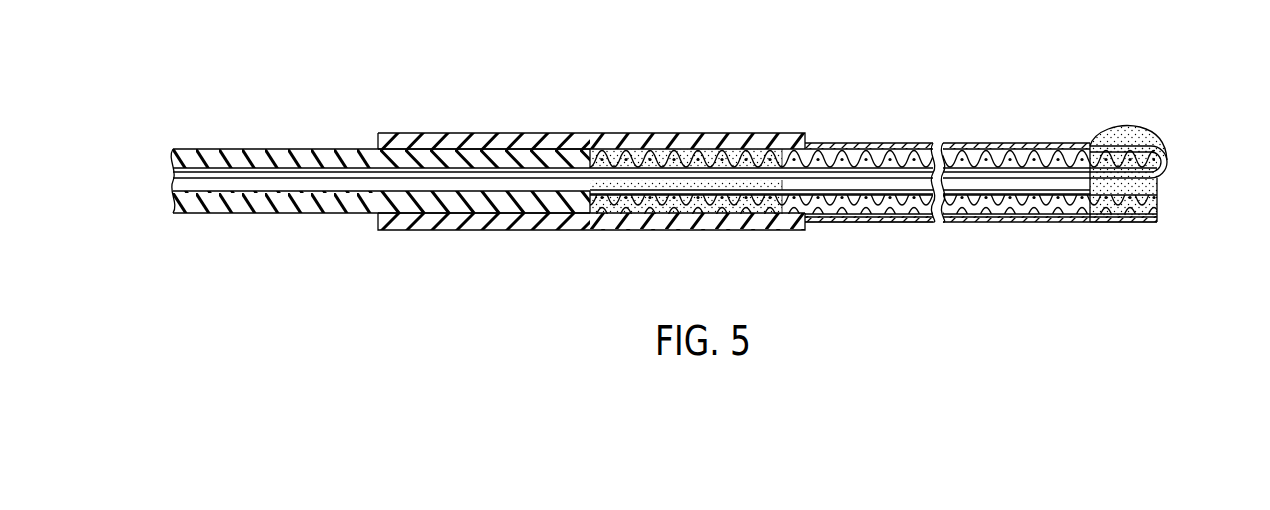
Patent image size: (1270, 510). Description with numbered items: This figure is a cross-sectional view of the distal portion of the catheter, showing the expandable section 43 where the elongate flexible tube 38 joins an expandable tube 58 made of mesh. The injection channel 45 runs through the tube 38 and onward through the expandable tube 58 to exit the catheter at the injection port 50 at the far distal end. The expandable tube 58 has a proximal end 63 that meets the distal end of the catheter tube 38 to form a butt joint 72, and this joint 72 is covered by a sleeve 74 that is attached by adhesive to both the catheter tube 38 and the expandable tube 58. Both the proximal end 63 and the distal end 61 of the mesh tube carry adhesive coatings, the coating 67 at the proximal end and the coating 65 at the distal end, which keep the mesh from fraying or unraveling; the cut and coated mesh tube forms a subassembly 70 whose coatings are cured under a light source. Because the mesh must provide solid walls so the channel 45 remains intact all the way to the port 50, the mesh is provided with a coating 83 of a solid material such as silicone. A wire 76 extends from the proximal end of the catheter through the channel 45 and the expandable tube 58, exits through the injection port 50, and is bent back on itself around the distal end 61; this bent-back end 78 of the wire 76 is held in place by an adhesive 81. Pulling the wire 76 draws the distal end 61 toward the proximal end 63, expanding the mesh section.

The flexible tube 38 is at (247, 157).
The expandable section 43 is at (841, 115).
The injection channel 45 is at (357, 186).
The injection port 50 is at (1174, 183).
The expandable tube 58 is at (905, 220).
The distal end 61 is at (1141, 240).
The proximal end 63 is at (608, 240).
The adhesive coating 65 is at (1112, 210).
The adhesive coating 67 is at (737, 212).
The subassembly 70 is at (836, 239).
The butt joint 72 is at (585, 212).
The sleeve 74 is at (535, 140).
The wire 76 is at (359, 179).
The end of the wire 78 is at (1166, 160).
The adhesive 81 is at (1122, 132).
The coating 83 is at (905, 143).